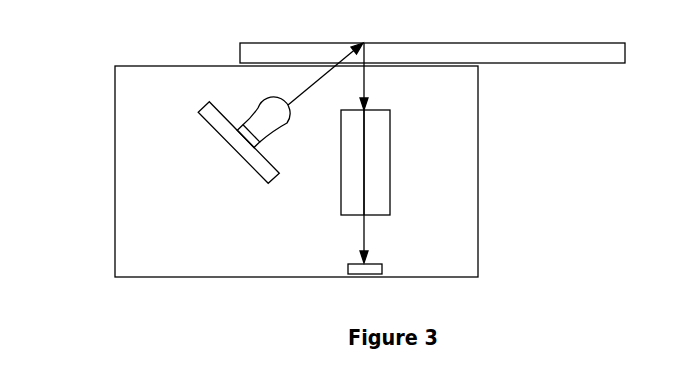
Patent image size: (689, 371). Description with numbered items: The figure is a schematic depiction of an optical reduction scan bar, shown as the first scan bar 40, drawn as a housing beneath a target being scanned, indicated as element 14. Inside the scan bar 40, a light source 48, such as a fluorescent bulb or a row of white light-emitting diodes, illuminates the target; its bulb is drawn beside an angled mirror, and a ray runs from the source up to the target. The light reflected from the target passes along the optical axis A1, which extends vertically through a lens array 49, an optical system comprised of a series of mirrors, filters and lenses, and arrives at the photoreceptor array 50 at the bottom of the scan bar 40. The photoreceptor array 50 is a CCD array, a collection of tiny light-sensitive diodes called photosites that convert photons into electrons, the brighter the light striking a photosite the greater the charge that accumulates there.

The sample holder / slide 14 is at (240, 52).
The first scan bar 40 is at (115, 177).
The light source 48 is at (236, 149).
The lens array 49 is at (390, 170).
The optical axis A1 is at (364, 200).
The photoreceptor array 50 is at (347, 270).